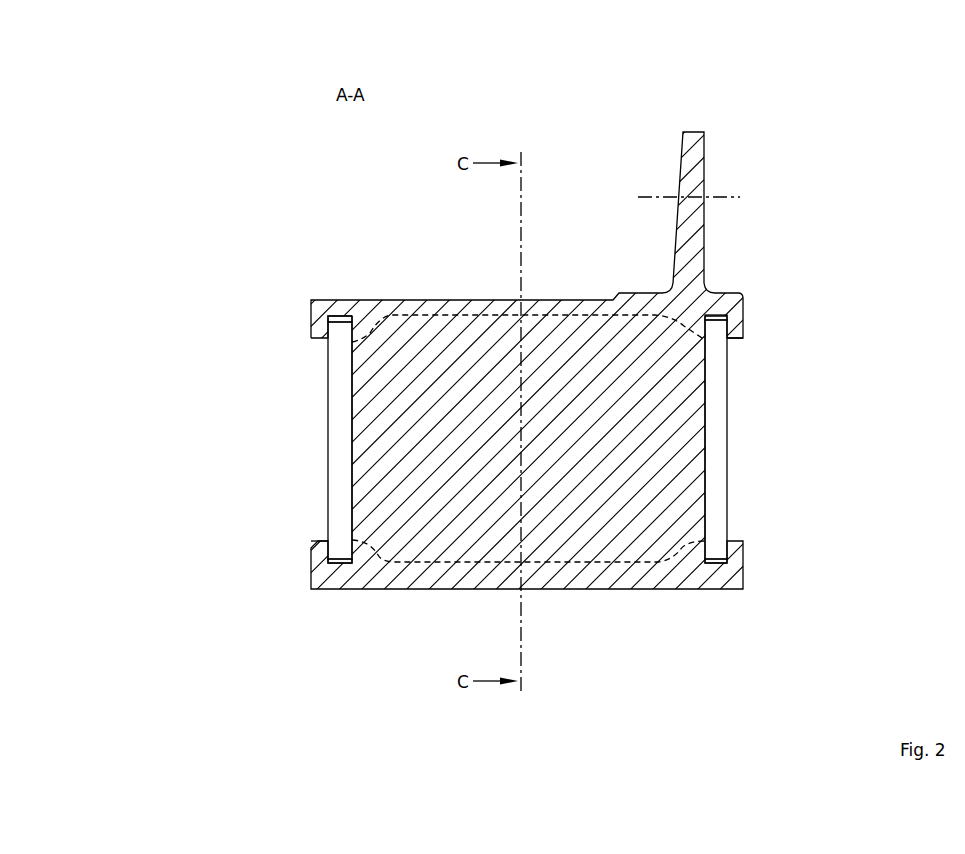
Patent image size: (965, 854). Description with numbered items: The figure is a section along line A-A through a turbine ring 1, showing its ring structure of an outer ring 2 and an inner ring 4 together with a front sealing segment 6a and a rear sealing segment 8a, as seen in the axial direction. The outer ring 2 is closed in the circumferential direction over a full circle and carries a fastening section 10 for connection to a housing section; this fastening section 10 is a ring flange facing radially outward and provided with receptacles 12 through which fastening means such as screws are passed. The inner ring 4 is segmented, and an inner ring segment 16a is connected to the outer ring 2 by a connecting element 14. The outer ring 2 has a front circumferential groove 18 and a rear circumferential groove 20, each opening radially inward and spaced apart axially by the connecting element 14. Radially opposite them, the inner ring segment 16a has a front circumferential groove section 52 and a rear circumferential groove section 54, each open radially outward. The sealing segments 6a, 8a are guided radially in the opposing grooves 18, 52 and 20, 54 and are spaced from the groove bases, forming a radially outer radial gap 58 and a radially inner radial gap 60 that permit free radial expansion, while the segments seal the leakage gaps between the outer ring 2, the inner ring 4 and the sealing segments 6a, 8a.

The turbine ring 1 is at (136, 68).
The outer ring 2 is at (380, 296).
The inner ring 4 is at (340, 592).
The front sealing segment 6a is at (338, 452).
The rear sealing segment 8a is at (718, 467).
The fastening section 10 is at (693, 157).
The receptacle 12 is at (725, 198).
The connecting element 14 is at (655, 357).
The inner ring segment 16a is at (613, 577).
The front circumferential groove 18 is at (349, 344).
The rear circumferential groove 20 is at (727, 318).
The front circumferential groove section 52 is at (349, 540).
The rear circumferential groove section 54 is at (730, 553).
The radially outer radial gap 58 is at (332, 317).
The radially inner radial gap 60 is at (332, 559).